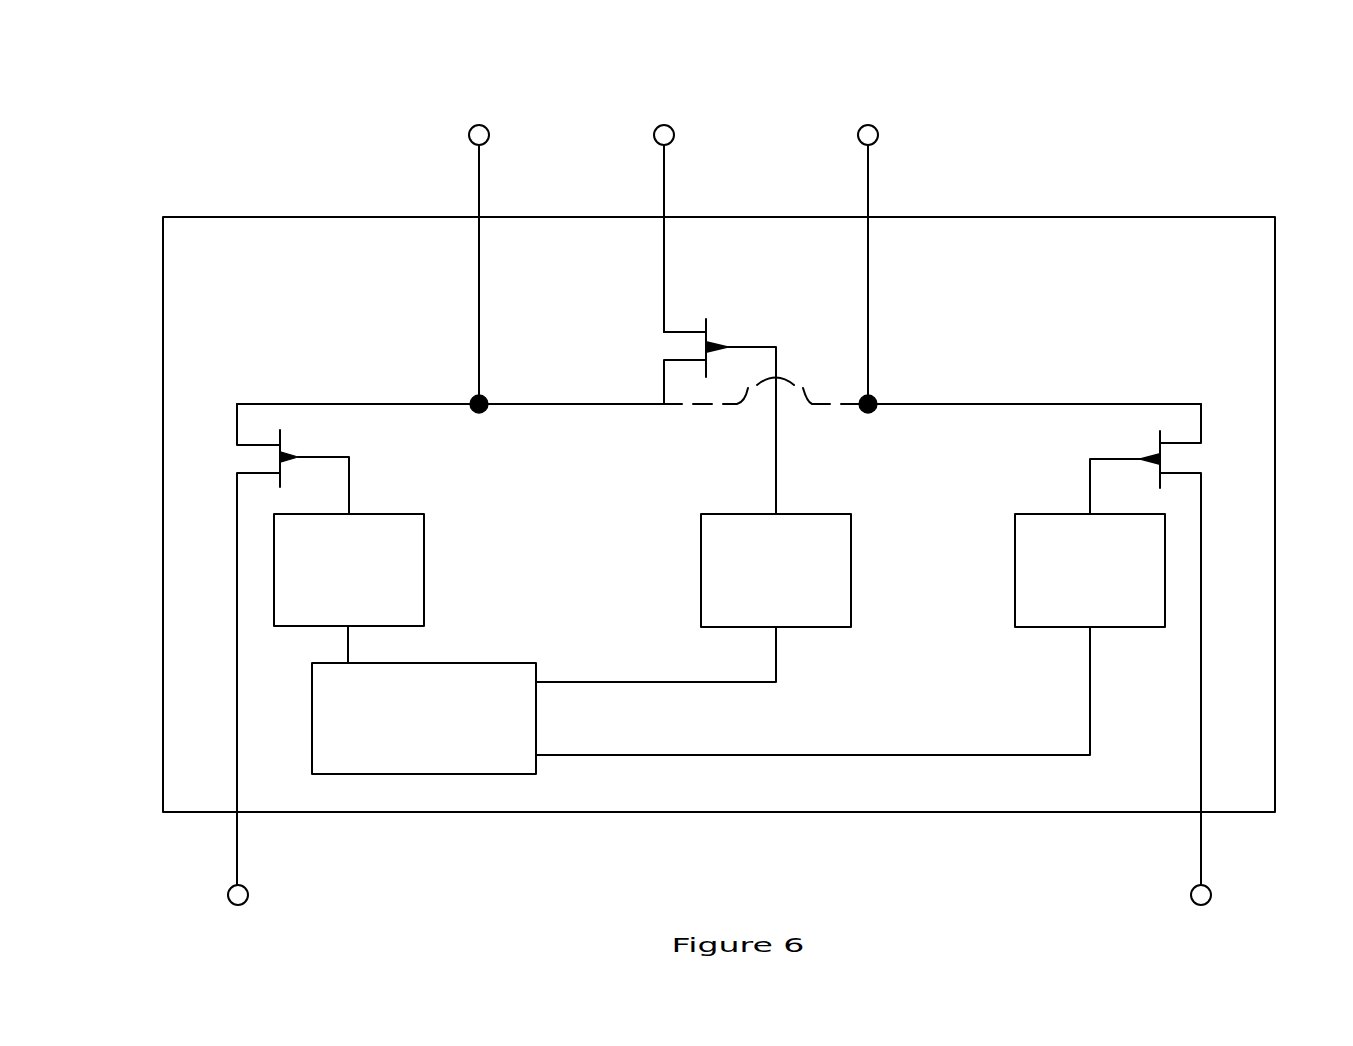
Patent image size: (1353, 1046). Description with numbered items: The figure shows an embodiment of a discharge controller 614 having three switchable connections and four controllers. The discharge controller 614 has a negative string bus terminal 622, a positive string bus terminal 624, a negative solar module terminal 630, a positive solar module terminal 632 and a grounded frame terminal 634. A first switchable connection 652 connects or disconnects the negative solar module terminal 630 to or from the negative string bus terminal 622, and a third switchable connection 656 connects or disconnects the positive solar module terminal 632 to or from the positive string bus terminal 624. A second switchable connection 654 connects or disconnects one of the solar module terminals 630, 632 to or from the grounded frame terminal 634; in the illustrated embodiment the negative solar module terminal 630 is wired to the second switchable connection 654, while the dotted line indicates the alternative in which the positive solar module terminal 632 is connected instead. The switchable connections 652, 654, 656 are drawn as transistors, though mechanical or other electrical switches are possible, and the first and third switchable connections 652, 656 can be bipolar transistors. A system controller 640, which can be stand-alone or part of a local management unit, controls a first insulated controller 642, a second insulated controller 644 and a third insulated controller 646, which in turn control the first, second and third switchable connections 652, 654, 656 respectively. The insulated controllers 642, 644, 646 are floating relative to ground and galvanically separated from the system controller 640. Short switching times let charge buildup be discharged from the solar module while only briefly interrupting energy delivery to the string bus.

The discharge controller 614 is at (280, 217).
The negative string bus terminal 622 is at (176, 904).
The positive string bus terminal 624 is at (1258, 904).
The negative solar module terminal 630 is at (409, 245).
The positive solar module terminal 632 is at (937, 245).
The grounded frame terminal 634 is at (664, 187).
The system controller 640 is at (424, 718).
The first insulated controller 642 is at (349, 588).
The second insulated controller 644 is at (693, 598).
The third insulated controller 646 is at (850, 634).
The first switchable connection 652 is at (235, 460).
The second switchable connection 654 is at (662, 348).
The third switchable connection 656 is at (1200, 458).